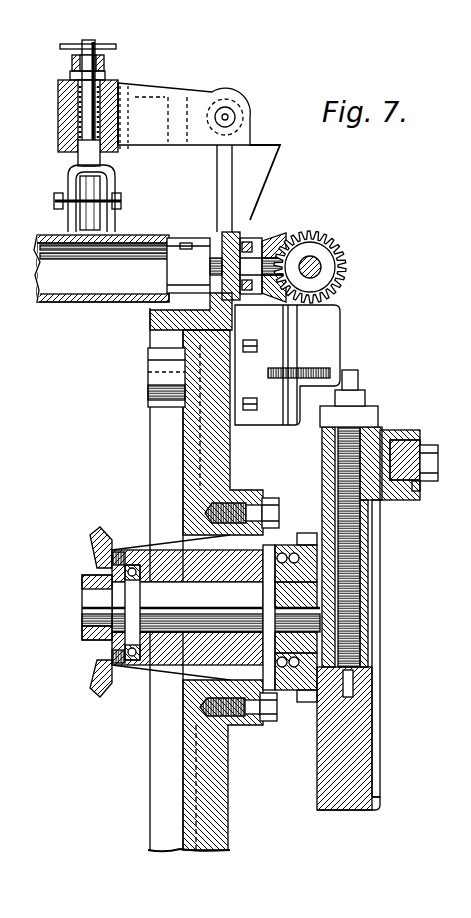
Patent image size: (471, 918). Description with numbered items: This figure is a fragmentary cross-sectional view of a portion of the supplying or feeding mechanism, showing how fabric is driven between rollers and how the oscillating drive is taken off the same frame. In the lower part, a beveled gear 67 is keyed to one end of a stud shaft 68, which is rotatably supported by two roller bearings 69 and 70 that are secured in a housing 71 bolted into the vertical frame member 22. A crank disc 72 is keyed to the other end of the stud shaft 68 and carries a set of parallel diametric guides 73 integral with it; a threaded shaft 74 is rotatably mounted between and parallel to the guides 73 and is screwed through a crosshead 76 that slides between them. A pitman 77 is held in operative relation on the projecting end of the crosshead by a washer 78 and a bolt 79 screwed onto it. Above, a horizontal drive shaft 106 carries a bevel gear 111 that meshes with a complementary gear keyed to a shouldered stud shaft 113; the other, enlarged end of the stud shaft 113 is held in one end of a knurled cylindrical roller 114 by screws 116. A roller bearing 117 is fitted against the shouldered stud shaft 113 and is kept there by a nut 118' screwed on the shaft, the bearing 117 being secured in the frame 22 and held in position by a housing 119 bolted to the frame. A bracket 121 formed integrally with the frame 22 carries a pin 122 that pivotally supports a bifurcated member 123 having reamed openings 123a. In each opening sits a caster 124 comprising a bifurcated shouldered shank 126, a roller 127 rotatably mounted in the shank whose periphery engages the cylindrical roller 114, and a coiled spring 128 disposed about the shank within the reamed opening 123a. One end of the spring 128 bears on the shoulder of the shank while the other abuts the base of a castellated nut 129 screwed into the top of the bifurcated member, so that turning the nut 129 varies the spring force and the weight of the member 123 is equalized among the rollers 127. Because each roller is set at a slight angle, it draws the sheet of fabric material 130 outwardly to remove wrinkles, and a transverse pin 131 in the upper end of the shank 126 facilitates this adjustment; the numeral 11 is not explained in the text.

The spindle housing 11 is at (10, 236).
The vertical frame member 22 is at (160, 437).
The beveled gear 67 is at (92, 672).
The stud shaft 68 is at (167, 580).
The roller bearing 69 is at (136, 576).
The roller bearing 70 is at (290, 544).
The housing 71 is at (135, 668).
The crank disc 72 is at (380, 803).
The diametric guides 73 is at (370, 577).
The threaded shaft 74 is at (352, 533).
The crosshead 76 is at (384, 440).
The pitman 77 is at (404, 432).
The washer 78 is at (420, 485).
The bolt 79 is at (438, 463).
The horizontal drive shaft 106 is at (312, 268).
The bevel gear 111 is at (346, 253).
The shouldered stud shaft 113 is at (166, 270).
The knurled cylindrical roller 114 is at (72, 302).
The screws 116 is at (187, 236).
The roller bearing 117 is at (214, 240).
The nut 118' is at (271, 256).
The housing 119 is at (258, 300).
The bracket 121 is at (266, 158).
The pin 122 is at (235, 117).
The bifurcated member 123 is at (181, 92).
The reamed opening 123a is at (126, 88).
The caster 124 is at (66, 82).
The bifurcated shouldered shank 126 is at (80, 155).
The roller 127 is at (96, 180).
The coiled spring 128 is at (76, 107).
The castellated nut 129 is at (72, 62).
The sheet of fabric material 130 is at (114, 236).
The pin 131 is at (116, 47).